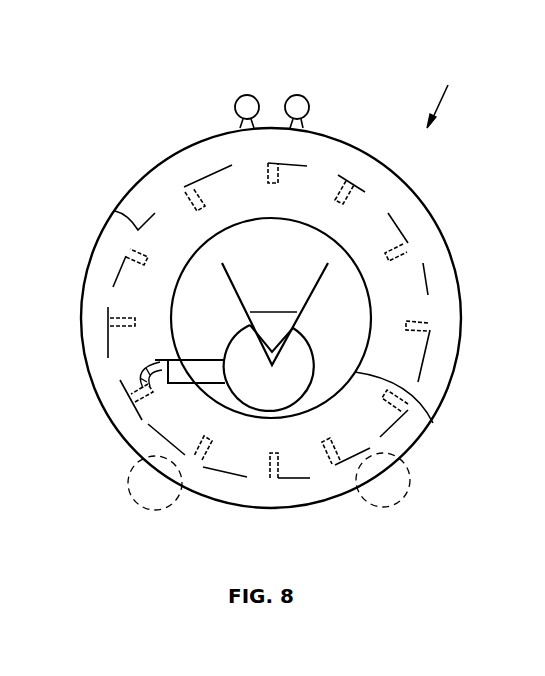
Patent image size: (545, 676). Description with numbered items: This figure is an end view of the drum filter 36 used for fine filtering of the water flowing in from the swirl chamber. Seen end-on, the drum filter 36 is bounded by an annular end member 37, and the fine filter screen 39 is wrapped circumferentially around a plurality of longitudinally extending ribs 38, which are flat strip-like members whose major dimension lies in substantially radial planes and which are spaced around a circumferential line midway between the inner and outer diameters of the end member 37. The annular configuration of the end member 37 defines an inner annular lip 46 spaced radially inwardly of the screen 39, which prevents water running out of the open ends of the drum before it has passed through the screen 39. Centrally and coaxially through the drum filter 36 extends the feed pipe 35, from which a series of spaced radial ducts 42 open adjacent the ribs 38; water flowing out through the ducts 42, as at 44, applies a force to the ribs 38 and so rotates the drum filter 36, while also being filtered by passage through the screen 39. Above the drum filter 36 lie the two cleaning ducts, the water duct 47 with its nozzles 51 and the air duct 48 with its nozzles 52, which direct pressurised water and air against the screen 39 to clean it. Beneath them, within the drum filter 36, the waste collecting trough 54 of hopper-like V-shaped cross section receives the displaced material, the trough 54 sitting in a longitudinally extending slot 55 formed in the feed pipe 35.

The feed pipe 35 is at (315, 356).
The drum filter 36 is at (451, 75).
The annular end member 37 is at (413, 207).
The rib 38 is at (120, 323).
The filter screen 39 is at (115, 211).
The radial duct 42 is at (215, 387).
The water flow from ducts 44 is at (170, 393).
The inner annular lip 46 is at (411, 406).
The water cleaning duct 47 is at (302, 96).
The air cleaning duct 48 is at (248, 95).
The nozzle 51 is at (303, 120).
The nozzle 52 is at (240, 121).
The waste collecting trough 54 is at (308, 288).
The slot 55 is at (293, 338).